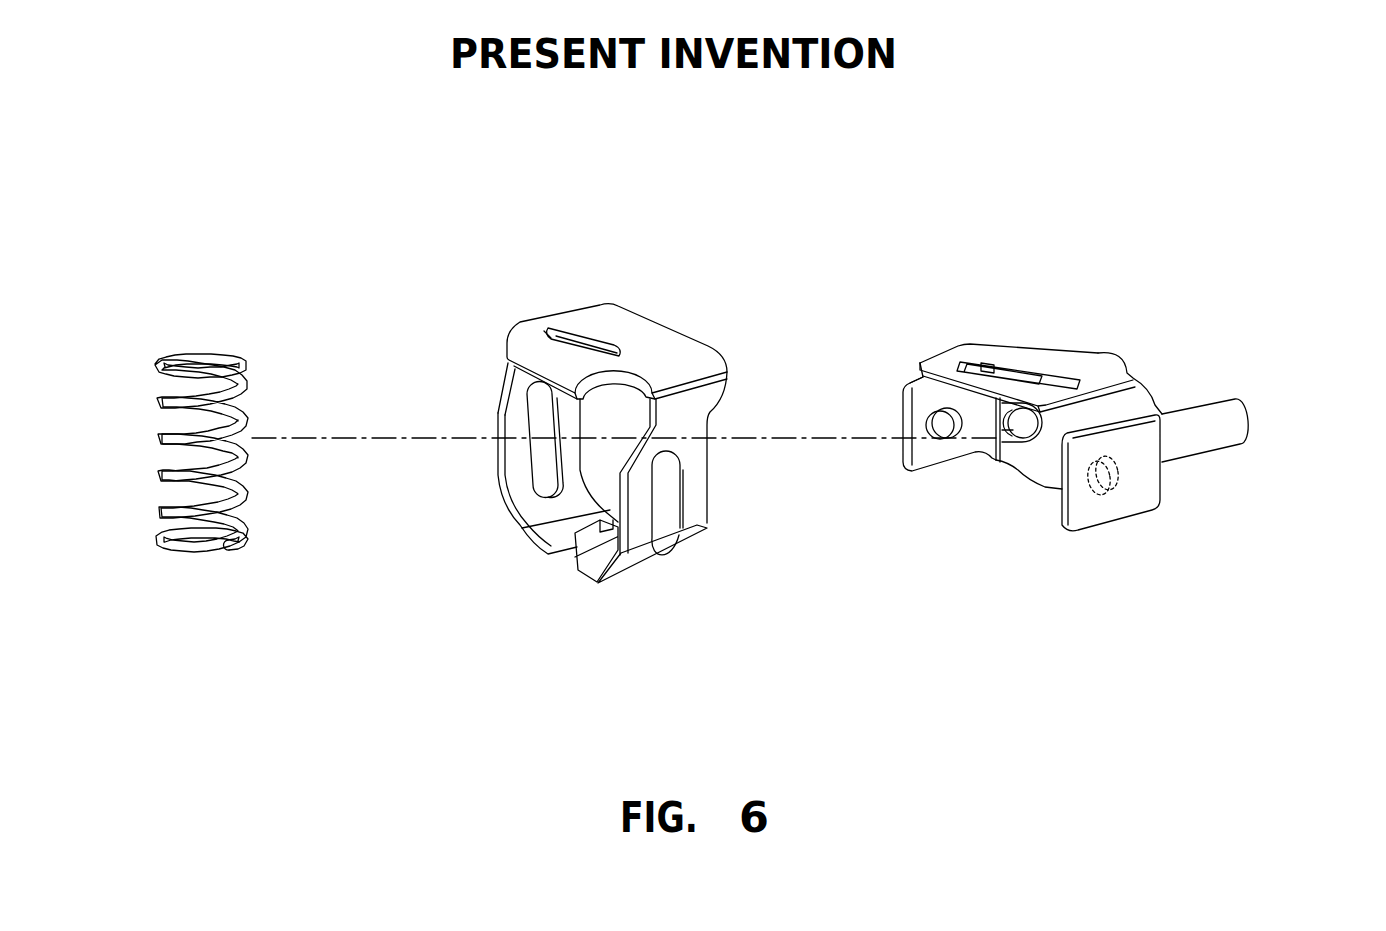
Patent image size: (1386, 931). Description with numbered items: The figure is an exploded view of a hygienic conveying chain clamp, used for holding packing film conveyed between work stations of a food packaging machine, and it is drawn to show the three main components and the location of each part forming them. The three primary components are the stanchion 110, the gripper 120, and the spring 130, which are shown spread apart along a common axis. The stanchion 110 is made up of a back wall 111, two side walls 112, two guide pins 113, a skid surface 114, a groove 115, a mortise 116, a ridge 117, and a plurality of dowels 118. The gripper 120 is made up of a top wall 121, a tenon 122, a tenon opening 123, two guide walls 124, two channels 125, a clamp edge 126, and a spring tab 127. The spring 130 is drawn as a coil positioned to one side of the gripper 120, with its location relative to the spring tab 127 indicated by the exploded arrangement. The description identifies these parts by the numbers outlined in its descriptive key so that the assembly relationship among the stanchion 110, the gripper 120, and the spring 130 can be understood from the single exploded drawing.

The stanchion 110 is at (1091, 422).
The back wall 111 is at (1134, 397).
The side walls 112 is at (919, 462).
The guide pins 113 is at (943, 420).
The skid surface 114 is at (987, 333).
The groove 115 is at (919, 359).
The mortise 116 is at (992, 366).
The ridge 117 is at (1028, 363).
The dowels 118 is at (1106, 350).
The gripper 120 is at (573, 429).
The top wall 121 is at (617, 318).
The tenon 122 is at (585, 334).
The tenon opening 123 is at (551, 330).
The guide walls 124 is at (523, 505).
The channels 125 is at (535, 465).
The clamp edge 126 is at (513, 370).
The spring tab 127 is at (590, 544).
The spring 130 is at (256, 535).